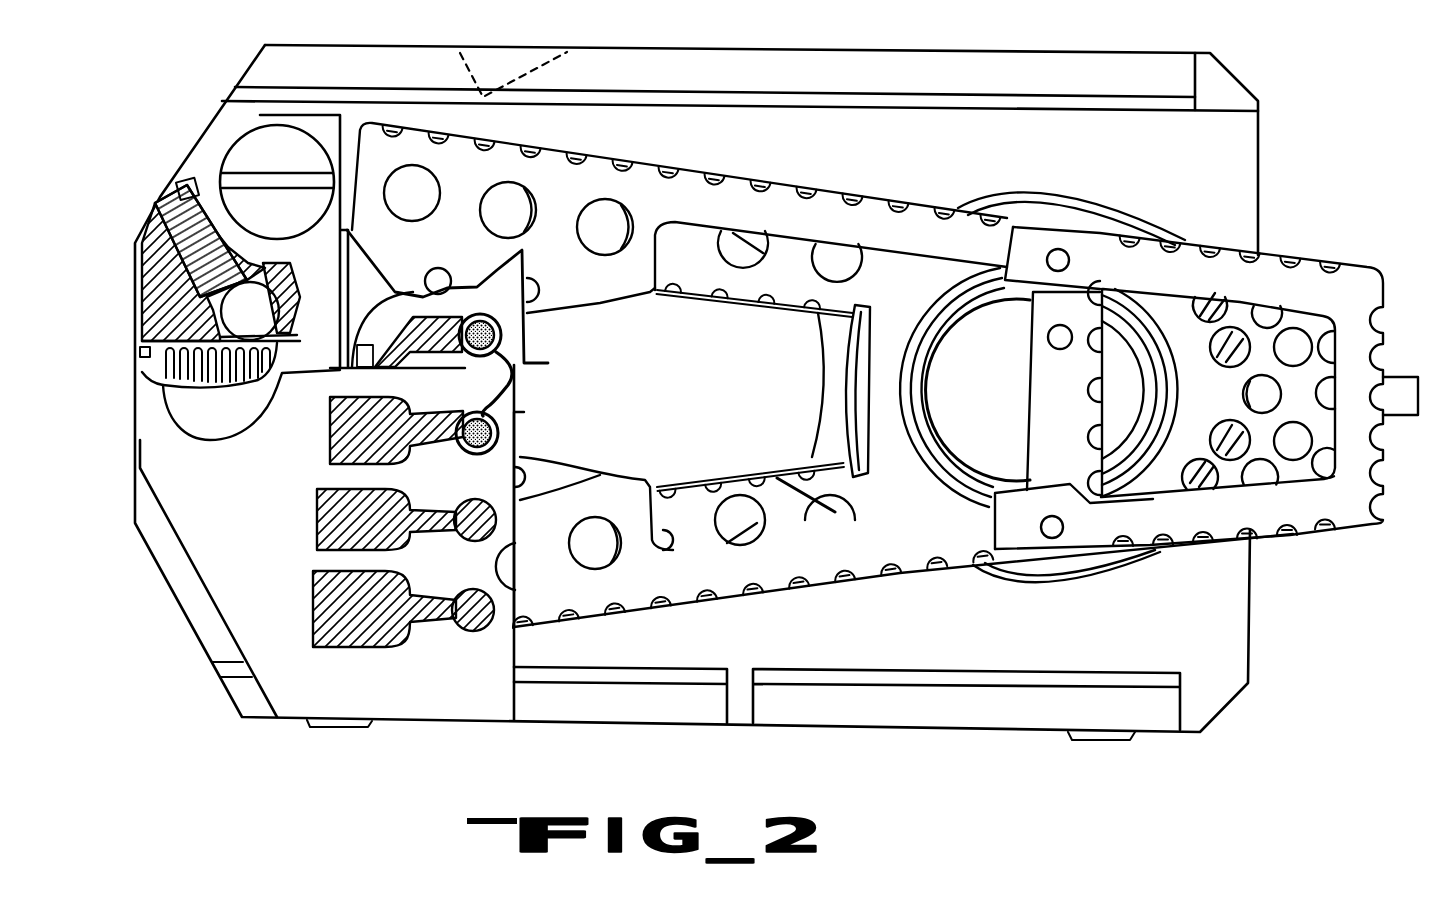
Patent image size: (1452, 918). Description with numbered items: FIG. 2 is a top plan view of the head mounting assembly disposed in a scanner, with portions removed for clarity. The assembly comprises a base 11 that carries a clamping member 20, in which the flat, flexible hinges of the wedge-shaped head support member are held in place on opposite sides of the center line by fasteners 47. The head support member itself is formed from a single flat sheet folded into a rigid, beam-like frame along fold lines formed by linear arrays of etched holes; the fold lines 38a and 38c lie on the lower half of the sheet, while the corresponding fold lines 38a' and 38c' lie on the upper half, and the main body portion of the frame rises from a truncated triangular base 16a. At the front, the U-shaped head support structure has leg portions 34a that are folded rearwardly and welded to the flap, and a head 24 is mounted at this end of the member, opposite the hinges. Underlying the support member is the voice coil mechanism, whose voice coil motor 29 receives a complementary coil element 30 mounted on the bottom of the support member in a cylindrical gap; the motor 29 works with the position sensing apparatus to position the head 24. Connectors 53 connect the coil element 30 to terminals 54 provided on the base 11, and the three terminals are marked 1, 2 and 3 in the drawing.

The base 11 is at (1245, 149).
The clamping member 20 is at (150, 440).
The fasteners 47 is at (293, 142).
The fold line 38a' is at (668, 245).
The fold line 38a is at (753, 578).
The fold line 38c' is at (831, 291).
The fold line 38c is at (751, 466).
The voice coil motor 29 is at (1002, 398).
The truncated triangular base 16a is at (917, 510).
The leg portions 34a is at (1266, 274).
The coil element 30 is at (1143, 480).
The head 24 is at (1405, 392).
The terminals 54 is at (490, 362).
The connectors 53 is at (515, 375).
The contact 1 is at (383, 609).
The contact 2 is at (384, 519).
The contact 3 is at (367, 430).